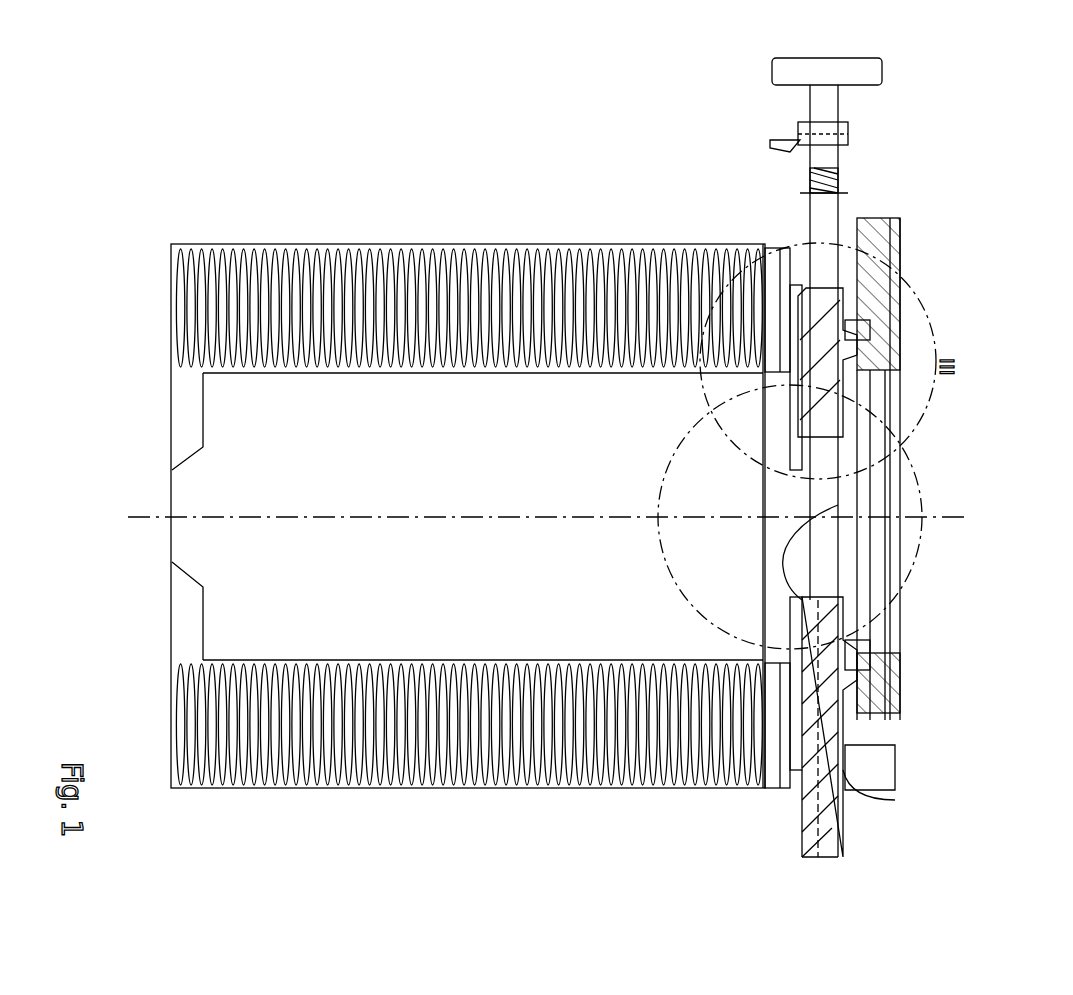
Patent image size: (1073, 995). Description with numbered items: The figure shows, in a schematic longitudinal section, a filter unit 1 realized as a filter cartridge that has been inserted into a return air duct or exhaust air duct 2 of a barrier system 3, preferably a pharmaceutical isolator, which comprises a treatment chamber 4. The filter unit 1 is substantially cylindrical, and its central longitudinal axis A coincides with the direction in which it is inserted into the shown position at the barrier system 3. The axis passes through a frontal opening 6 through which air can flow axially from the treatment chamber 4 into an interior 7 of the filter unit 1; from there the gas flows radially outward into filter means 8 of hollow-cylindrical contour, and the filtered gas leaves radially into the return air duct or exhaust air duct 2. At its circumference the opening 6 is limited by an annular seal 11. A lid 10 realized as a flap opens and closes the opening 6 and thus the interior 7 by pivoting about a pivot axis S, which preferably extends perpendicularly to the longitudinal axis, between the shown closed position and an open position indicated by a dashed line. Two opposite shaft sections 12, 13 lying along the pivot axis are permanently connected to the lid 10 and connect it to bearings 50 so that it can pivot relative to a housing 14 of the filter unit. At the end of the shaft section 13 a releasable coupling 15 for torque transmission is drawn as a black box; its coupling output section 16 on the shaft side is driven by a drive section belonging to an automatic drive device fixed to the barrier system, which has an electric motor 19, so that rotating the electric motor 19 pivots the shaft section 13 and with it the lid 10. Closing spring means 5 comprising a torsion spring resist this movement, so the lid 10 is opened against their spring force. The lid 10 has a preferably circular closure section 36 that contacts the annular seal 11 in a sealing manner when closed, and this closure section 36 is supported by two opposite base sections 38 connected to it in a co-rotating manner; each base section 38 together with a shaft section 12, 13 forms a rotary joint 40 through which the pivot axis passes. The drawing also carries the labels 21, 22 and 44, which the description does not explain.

The filter unit 1 is at (393, 792).
The return air duct or exhaust air duct 2 is at (860, 752).
The barrier system 3 is at (853, 733).
The treatment chamber 4 is at (895, 640).
The closing spring means 5 is at (203, 418).
The frontal opening 6 is at (900, 556).
The interior 7 is at (130, 518).
The filter means 8 is at (253, 246).
The lid 10 is at (840, 100).
The annular seal 11 is at (895, 612).
The shaft section 12 is at (483, 608).
The shaft section 13 is at (772, 76).
The housing 14 is at (370, 246).
The releasable coupling 15 is at (795, 148).
The coupling output section 16 is at (848, 140).
The electric motor 19 is at (884, 72).
The thread 21 is at (800, 128).
The clamp block 22 is at (880, 480).
The closure section 36 is at (770, 790).
The base sections 38 is at (778, 792).
The rotary joint 40 is at (862, 300).
The retainer 44 is at (900, 575).
The bearings 50 is at (907, 703).